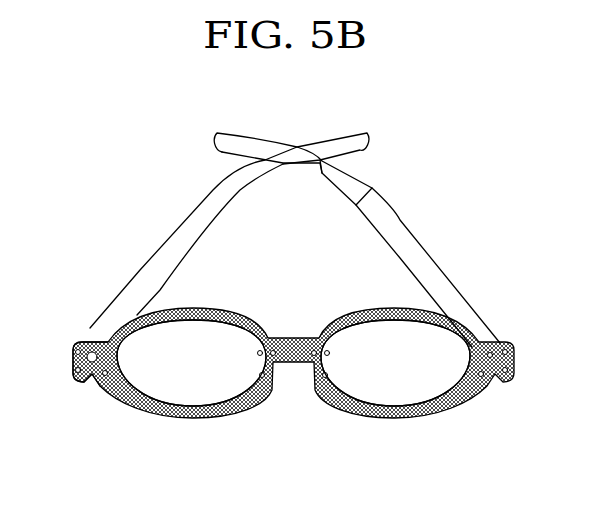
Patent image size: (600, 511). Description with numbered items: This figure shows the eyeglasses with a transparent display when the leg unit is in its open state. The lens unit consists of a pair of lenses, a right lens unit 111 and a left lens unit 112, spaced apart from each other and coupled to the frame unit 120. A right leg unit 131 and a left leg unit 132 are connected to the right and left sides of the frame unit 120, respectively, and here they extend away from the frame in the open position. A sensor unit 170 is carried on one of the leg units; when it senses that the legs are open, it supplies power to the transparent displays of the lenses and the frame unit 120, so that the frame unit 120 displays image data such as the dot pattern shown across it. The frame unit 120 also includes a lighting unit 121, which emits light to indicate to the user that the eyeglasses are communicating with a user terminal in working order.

The right lens unit 111 is at (182, 402).
The left lens unit 112 is at (403, 402).
The frame unit 120 is at (460, 407).
The lighting unit 121 is at (90, 343).
The right leg unit 131 is at (333, 143).
The left leg unit 132 is at (247, 141).
The sensor unit 170 is at (353, 178).